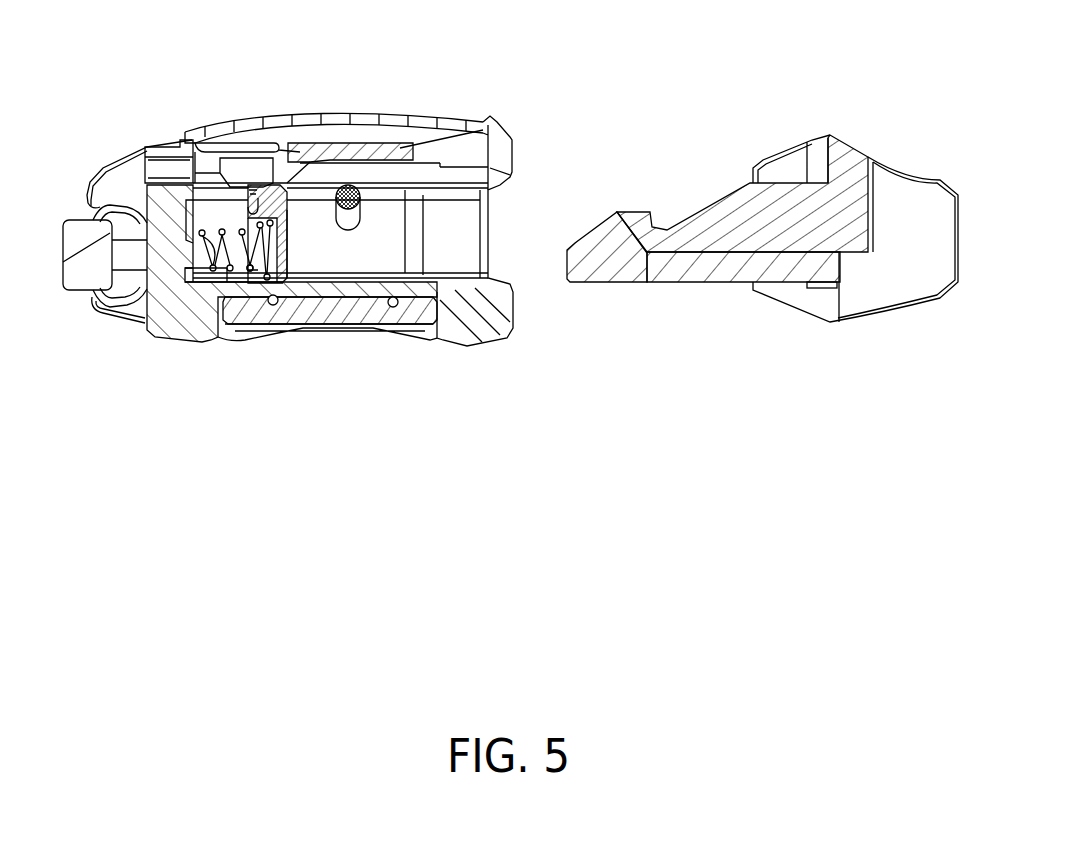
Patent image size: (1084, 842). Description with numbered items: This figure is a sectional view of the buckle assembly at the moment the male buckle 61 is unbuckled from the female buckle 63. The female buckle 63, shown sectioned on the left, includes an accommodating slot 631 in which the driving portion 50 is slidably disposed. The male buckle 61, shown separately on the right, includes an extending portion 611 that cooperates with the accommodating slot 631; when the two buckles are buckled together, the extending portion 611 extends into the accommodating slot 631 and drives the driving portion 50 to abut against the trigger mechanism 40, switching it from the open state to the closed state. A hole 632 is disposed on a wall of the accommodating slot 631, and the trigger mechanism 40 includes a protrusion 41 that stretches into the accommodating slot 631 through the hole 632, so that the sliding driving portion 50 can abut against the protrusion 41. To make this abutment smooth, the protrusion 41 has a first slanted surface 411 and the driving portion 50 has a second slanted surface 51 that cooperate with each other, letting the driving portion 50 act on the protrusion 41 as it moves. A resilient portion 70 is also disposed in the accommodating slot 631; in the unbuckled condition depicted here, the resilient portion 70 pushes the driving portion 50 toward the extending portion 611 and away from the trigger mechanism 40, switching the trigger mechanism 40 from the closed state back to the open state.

The trigger mechanism 40 is at (306, 252).
The protrusion 41 is at (247, 183).
The first slanted surface 411 is at (278, 222).
The driving portion 50 is at (247, 258).
The second slanted surface 51 is at (250, 187).
The male buckle 61 is at (878, 255).
The extending portion 611 is at (630, 260).
The female buckle 63 is at (123, 182).
The accommodating slot 631 is at (385, 236).
The hole 632 is at (230, 188).
The resilient portion 70 is at (224, 240).